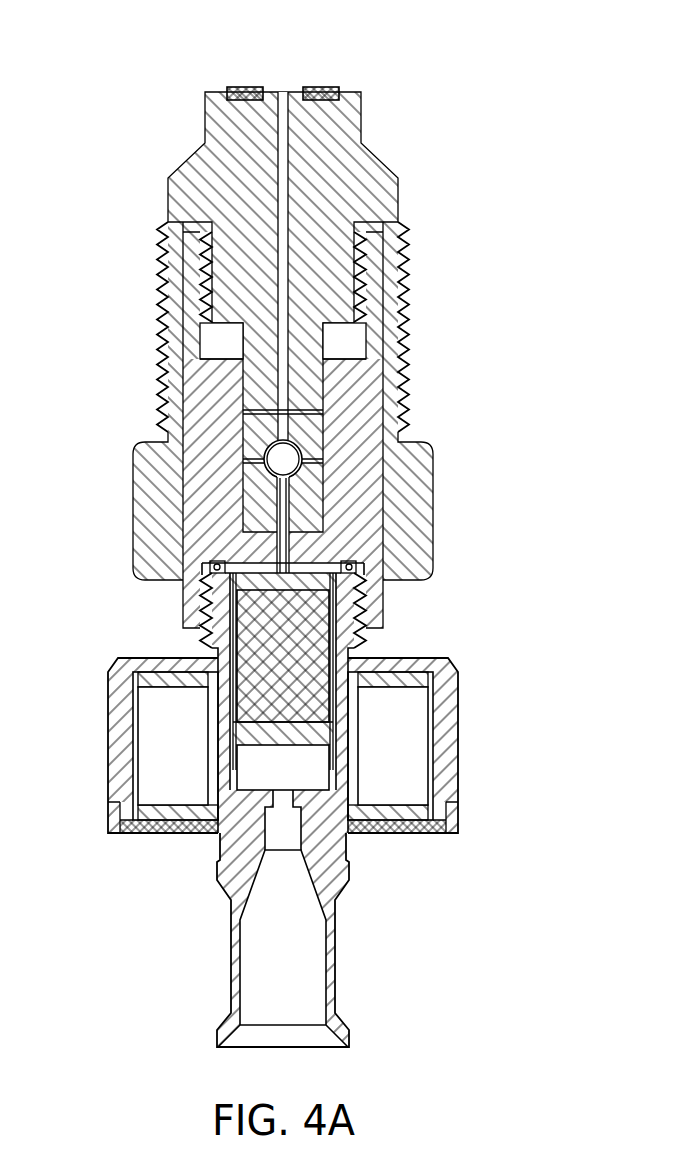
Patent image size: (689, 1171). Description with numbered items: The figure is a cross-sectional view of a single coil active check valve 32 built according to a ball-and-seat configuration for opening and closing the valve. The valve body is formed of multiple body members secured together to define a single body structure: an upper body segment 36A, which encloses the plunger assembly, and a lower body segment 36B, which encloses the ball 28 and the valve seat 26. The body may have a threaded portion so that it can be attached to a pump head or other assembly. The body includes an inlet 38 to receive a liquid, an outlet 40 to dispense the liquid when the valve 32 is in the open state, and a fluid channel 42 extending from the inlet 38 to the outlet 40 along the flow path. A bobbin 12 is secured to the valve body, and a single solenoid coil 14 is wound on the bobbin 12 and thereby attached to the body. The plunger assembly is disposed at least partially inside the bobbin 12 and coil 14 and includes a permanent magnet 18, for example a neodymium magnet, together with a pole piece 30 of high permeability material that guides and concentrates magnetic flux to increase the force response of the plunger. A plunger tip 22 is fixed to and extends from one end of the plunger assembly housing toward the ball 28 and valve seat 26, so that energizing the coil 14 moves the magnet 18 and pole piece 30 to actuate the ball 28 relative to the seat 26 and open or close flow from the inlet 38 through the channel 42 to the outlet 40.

The single coil active check valve 32 is at (358, 270).
The outlet 40 is at (283, 50).
The fluid channel 42 is at (289, 207).
The body segment 36A is at (193, 381).
The ball 28 is at (302, 459).
The valve seat 26 is at (257, 505).
The plunger tip 22 is at (282, 560).
The permanent magnet 18 is at (293, 683).
The pole piece 30 is at (313, 732).
The inlet 38 is at (241, 826).
The solenoid coil 14 is at (140, 725).
The bobbin 12 is at (208, 745).
The body segment 36B is at (219, 880).